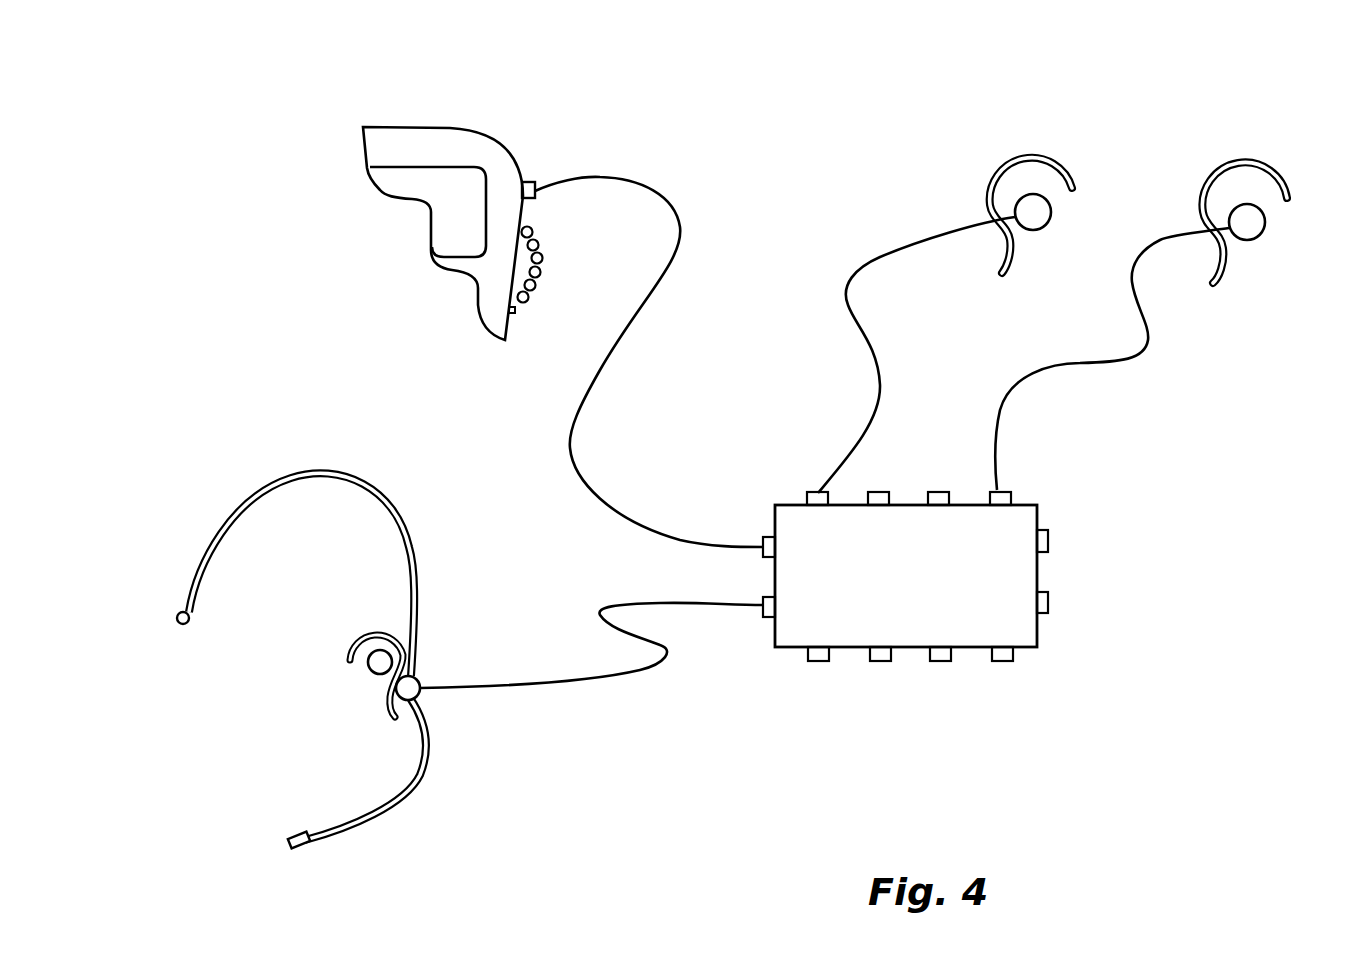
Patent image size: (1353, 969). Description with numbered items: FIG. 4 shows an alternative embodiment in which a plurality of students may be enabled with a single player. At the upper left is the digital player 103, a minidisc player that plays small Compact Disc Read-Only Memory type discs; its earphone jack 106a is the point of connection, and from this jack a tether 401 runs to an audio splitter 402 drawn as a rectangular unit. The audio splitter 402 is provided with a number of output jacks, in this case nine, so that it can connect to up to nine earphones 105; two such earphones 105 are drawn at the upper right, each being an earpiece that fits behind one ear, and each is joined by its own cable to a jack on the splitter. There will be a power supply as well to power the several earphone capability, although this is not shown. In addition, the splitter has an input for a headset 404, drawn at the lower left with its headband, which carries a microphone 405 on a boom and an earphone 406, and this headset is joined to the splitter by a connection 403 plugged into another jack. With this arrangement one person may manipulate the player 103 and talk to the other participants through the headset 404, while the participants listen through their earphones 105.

The digital player 103 is at (483, 113).
The earphone jack 106a is at (528, 178).
The tether 401 is at (680, 227).
The audio splitter 402 is at (883, 592).
The earphone 105 is at (913, 237).
The headset 404 is at (325, 470).
The microphone 405 is at (288, 842).
The earphone 406 is at (378, 650).
The connection 403 is at (603, 677).